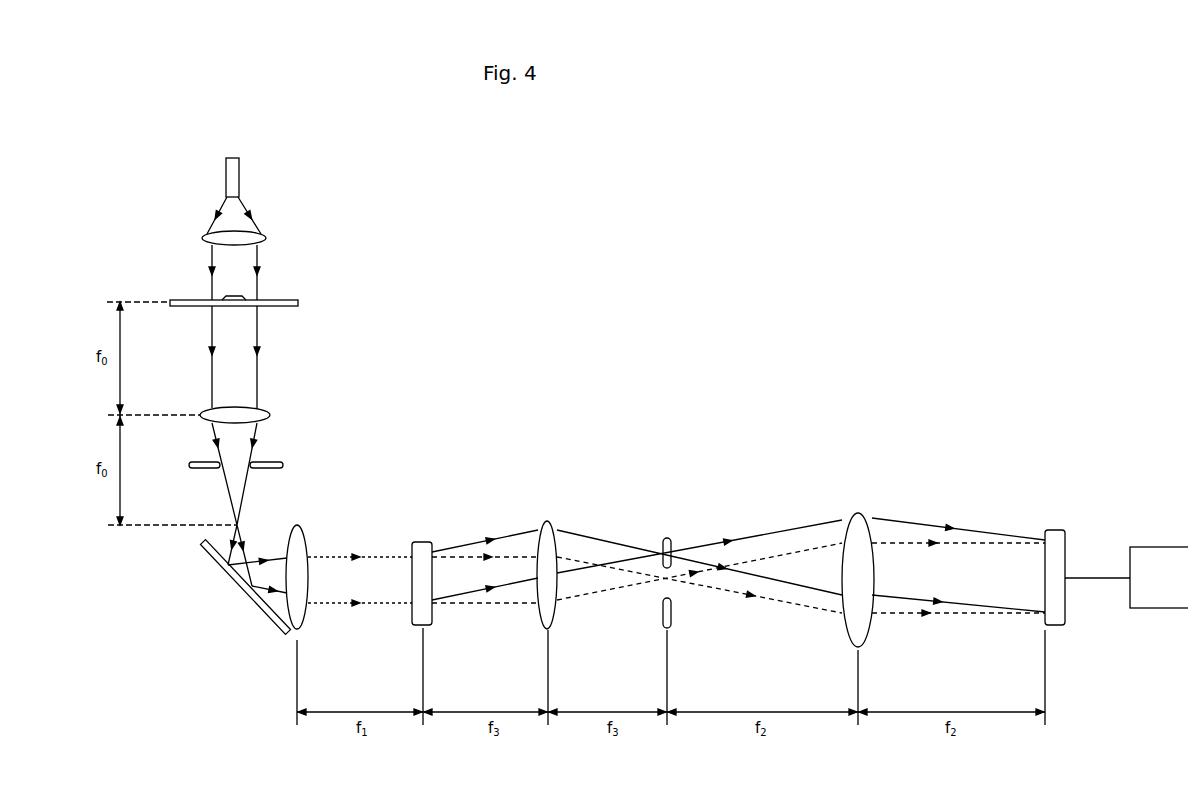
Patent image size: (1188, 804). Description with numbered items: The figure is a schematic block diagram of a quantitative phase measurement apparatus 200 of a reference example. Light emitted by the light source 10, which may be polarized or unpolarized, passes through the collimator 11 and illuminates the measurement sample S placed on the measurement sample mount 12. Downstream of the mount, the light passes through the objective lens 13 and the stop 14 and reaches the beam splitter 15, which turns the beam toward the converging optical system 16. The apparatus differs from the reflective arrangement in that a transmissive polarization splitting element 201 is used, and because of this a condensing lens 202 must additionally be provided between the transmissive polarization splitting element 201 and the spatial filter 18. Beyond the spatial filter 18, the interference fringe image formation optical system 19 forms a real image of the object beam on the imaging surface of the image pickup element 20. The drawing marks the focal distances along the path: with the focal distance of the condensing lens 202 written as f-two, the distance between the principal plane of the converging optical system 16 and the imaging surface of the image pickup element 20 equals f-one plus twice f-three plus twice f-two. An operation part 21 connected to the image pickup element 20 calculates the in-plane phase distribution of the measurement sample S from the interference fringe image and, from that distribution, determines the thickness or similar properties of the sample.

The light source 10 is at (242, 172).
The collimator 11 is at (266, 238).
The measurement sample mount 12 is at (298, 302).
The measurement sample S is at (246, 297).
The objective lens 13 is at (270, 414).
The stop 14 is at (283, 465).
The beam splitter 15 is at (240, 594).
The converging optical system 16 is at (298, 524).
The transmissive polarization splitting element 201 is at (425, 541).
The condensing lens 202 is at (549, 522).
The spatial filter 18 is at (667, 537).
The interference fringe image formation optical system 19 is at (858, 513).
The image pickup element 20 is at (1055, 530).
The operation part 21 is at (1160, 609).
The quantitative phase measurement apparatus 200 is at (790, 216).